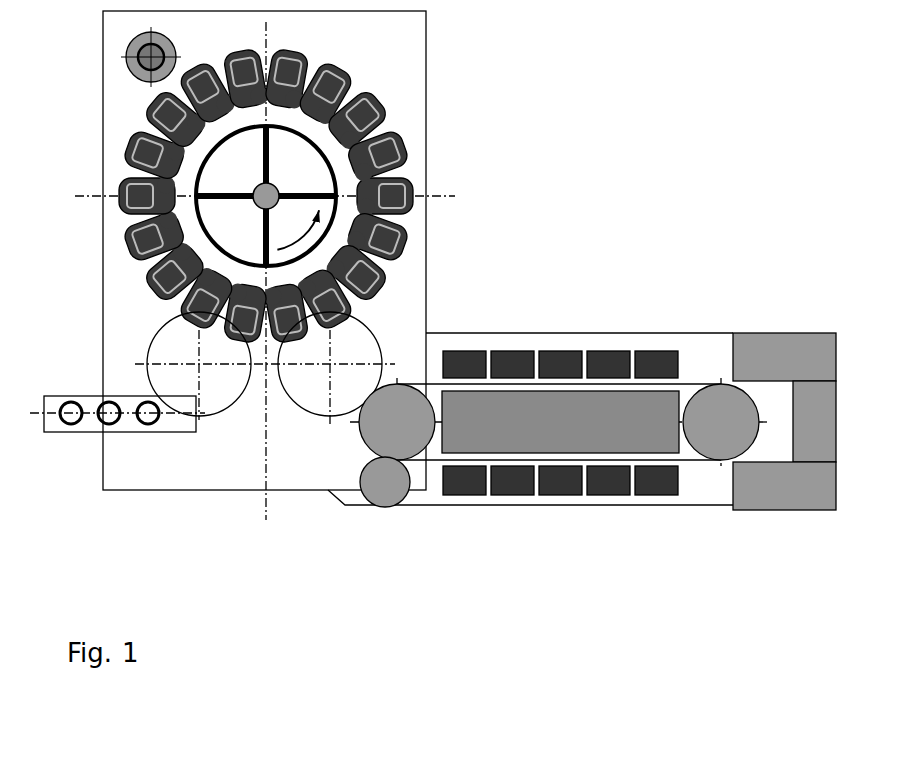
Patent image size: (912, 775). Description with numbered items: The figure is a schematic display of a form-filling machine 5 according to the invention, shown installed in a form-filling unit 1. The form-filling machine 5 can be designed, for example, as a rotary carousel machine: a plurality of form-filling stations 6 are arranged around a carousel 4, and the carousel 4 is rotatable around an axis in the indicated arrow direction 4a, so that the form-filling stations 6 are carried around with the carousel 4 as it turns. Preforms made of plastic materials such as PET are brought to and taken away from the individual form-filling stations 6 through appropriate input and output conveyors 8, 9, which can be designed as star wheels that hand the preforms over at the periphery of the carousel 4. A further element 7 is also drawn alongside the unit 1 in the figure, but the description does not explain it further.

The form-filling unit 1 is at (640, 162).
The carousel 4 is at (300, 177).
The arrow direction 4a is at (298, 230).
The form-filling machine 5 is at (290, 196).
The form-filling station 6 is at (398, 148).
The conveyor 7 is at (657, 337).
The output conveyor 8 is at (354, 393).
The input conveyor 9 is at (226, 393).